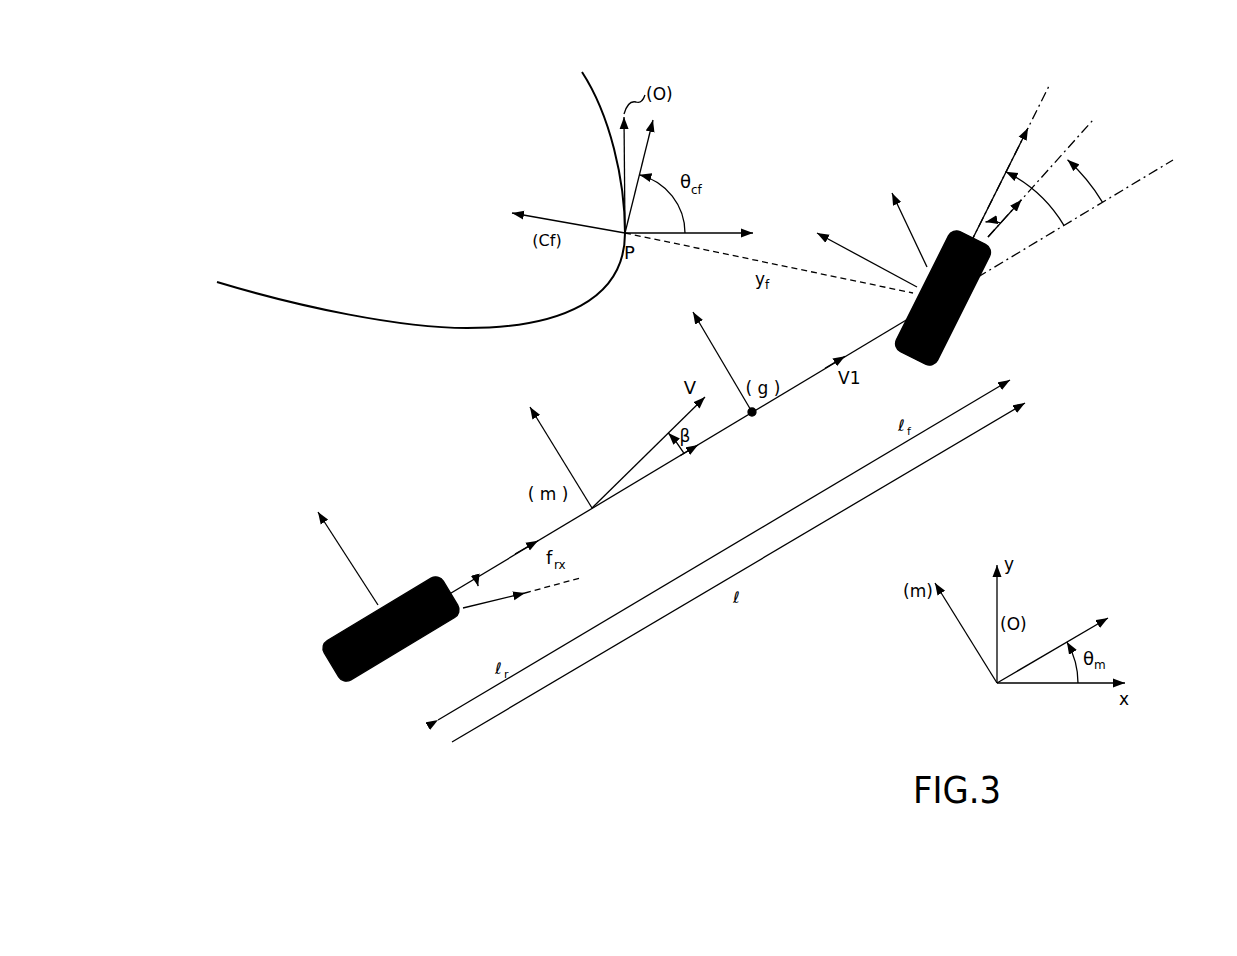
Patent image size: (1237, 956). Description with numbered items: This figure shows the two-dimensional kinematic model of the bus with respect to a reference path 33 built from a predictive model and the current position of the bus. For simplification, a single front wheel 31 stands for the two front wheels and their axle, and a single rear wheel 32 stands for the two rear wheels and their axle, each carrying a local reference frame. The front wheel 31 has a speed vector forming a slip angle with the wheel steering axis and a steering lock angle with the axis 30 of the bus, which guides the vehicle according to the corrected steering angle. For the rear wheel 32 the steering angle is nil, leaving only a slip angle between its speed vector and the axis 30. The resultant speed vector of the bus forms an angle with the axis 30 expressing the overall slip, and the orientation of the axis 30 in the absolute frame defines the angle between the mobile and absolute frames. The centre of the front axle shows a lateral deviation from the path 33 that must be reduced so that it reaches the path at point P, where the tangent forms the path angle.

The axis of the bus 30 is at (1033, 247).
The front wheel 31 is at (960, 327).
The rear wheel 32 is at (408, 655).
The path 33 is at (502, 327).